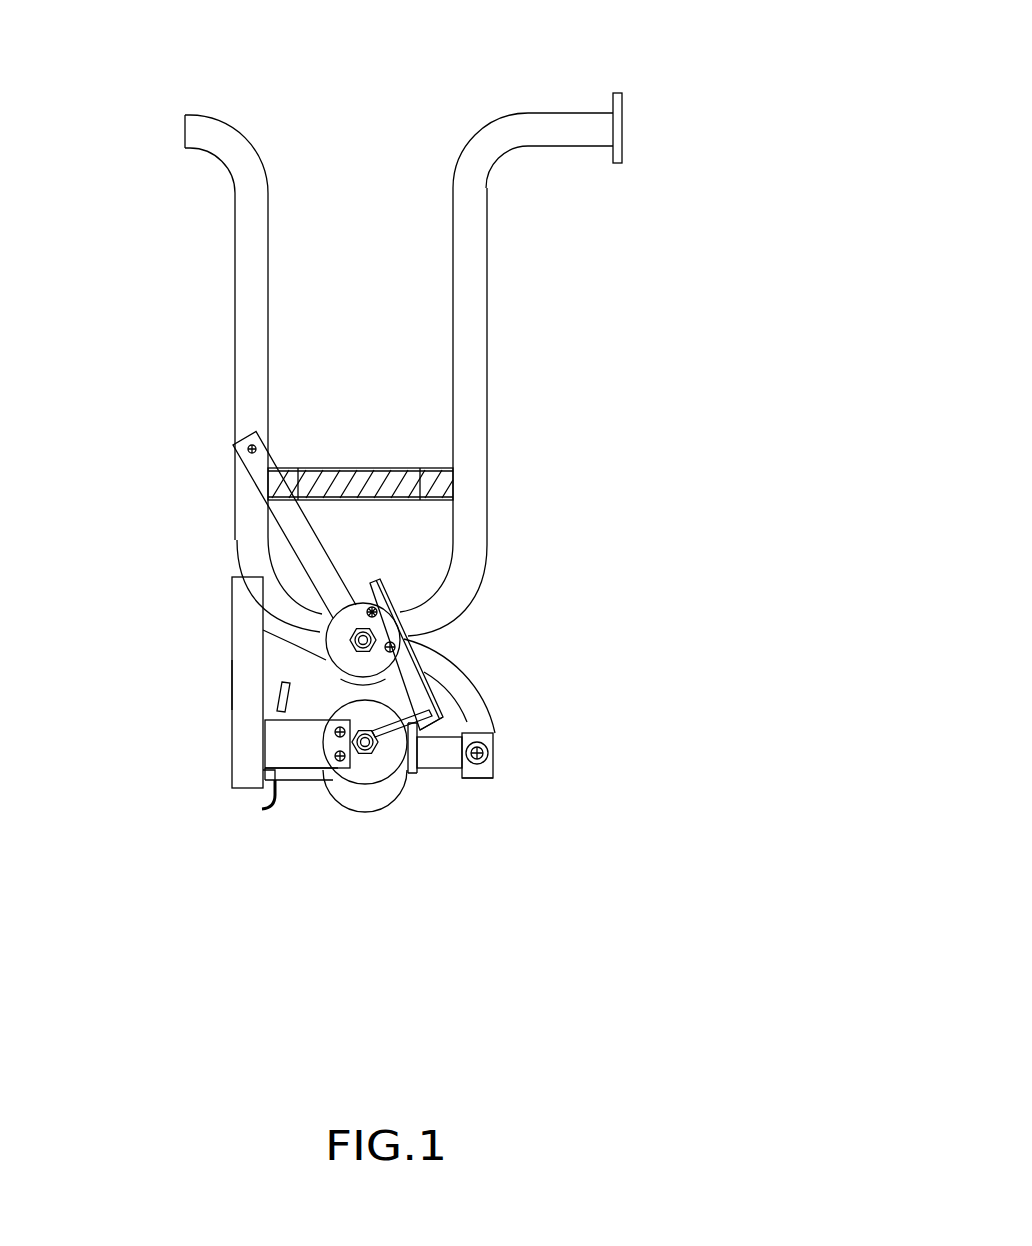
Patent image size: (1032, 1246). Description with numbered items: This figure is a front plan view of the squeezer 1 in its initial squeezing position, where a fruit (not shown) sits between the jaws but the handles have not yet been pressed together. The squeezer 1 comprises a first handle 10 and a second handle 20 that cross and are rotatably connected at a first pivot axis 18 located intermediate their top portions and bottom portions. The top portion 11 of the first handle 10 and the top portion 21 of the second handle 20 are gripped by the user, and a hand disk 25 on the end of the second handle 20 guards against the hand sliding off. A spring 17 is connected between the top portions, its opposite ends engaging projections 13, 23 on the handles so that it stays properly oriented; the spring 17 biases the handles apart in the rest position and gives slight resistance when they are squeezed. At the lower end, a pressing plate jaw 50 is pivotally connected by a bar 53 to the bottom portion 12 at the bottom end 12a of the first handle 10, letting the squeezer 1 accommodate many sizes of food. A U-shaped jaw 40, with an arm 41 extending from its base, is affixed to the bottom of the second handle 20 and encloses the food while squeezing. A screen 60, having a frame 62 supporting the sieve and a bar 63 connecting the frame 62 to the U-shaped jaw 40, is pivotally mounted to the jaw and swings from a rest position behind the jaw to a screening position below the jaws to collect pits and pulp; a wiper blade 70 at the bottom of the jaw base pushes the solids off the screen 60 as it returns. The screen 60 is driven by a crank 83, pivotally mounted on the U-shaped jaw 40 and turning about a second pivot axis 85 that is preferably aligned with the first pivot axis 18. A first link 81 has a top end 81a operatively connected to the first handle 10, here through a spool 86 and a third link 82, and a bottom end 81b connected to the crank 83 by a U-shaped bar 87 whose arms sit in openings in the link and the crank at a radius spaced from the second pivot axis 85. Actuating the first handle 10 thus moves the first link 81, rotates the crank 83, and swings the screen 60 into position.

The squeezer 1 is at (625, 347).
The first handle 10 is at (220, 113).
The top portion of first handle 11 is at (212, 270).
The bottom portion of first handle 12 is at (498, 750).
The bottom end of first handle 12a is at (493, 777).
The projection 13 is at (295, 457).
The spring 17 is at (363, 453).
The first pivot axis 18 is at (363, 636).
The second handle 20 is at (550, 103).
The top portion of second handle 21 is at (492, 282).
The projection 23 is at (440, 463).
The hand disk 25 is at (637, 123).
The U-shaped jaw 40 is at (283, 787).
The arm 41 is at (309, 773).
The pressing plate jaw 50 is at (408, 770).
The bar 53 is at (440, 768).
The screen 60 is at (217, 620).
The frame 62 is at (232, 684).
The bar 63 is at (280, 747).
The wiper blade 70 is at (256, 810).
The first link 81 is at (397, 660).
The top end of first link 81a is at (380, 600).
The bottom end of first link 81b is at (427, 730).
The third link 82 is at (250, 479).
The crank 83 is at (363, 788).
The second pivot axis 85 is at (367, 745).
The spool 86 is at (358, 683).
The U-shaped bar 87 is at (427, 713).